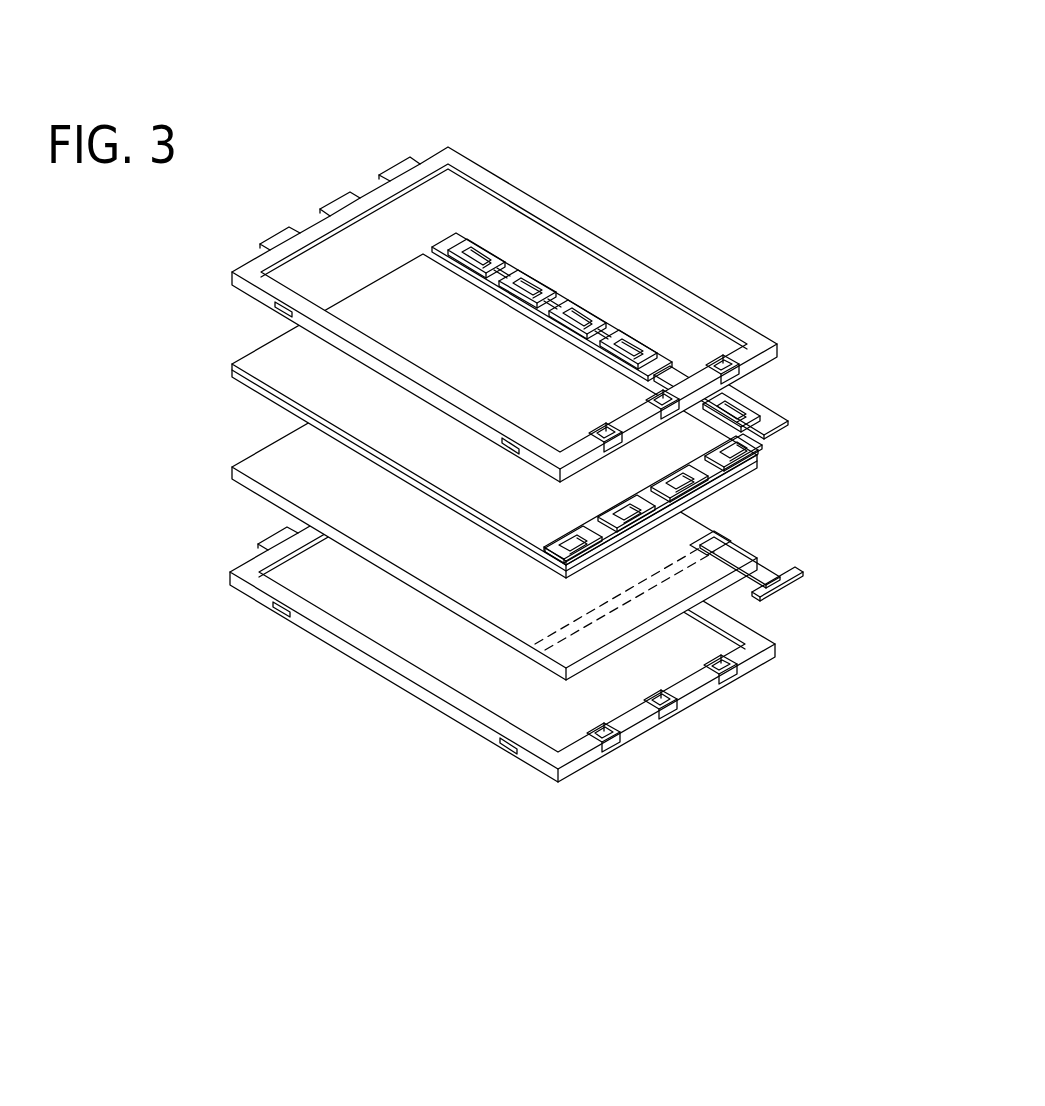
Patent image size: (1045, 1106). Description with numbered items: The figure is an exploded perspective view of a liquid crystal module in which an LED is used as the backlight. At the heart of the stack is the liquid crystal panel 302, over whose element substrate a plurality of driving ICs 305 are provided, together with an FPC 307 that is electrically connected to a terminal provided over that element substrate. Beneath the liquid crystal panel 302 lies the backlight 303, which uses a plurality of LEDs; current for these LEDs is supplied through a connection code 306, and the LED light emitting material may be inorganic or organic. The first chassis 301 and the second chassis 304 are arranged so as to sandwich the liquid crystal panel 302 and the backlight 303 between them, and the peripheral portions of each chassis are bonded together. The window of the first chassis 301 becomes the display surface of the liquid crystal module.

The first chassis 301 is at (496, 183).
The liquid crystal panel 302 is at (272, 367).
The backlight 303 is at (273, 482).
The second chassis 304 is at (557, 782).
The driving IC 305 is at (740, 397).
The connection code 306 is at (780, 555).
The FPC 307 is at (783, 420).